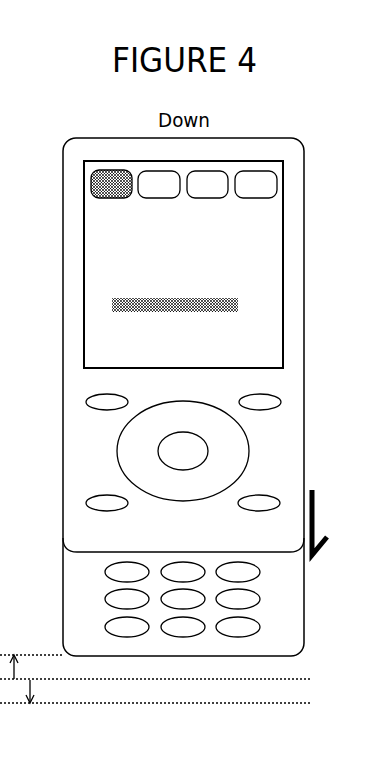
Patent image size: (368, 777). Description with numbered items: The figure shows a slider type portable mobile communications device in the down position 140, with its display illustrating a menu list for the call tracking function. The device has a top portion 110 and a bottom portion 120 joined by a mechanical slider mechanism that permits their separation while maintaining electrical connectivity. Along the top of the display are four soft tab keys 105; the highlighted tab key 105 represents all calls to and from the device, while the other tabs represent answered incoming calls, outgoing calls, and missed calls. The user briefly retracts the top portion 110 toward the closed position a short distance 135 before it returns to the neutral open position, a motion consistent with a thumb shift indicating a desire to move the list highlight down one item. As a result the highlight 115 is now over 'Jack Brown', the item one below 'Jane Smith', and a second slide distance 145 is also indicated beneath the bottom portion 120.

The tab key 105 is at (109, 199).
The top portion 110 is at (62, 317).
The highlight 115 is at (213, 314).
The bottom portion 120 is at (62, 601).
The short distance 135 is at (27, 668).
The down position 140 is at (327, 520).
The second slide distance 145 is at (42, 692).